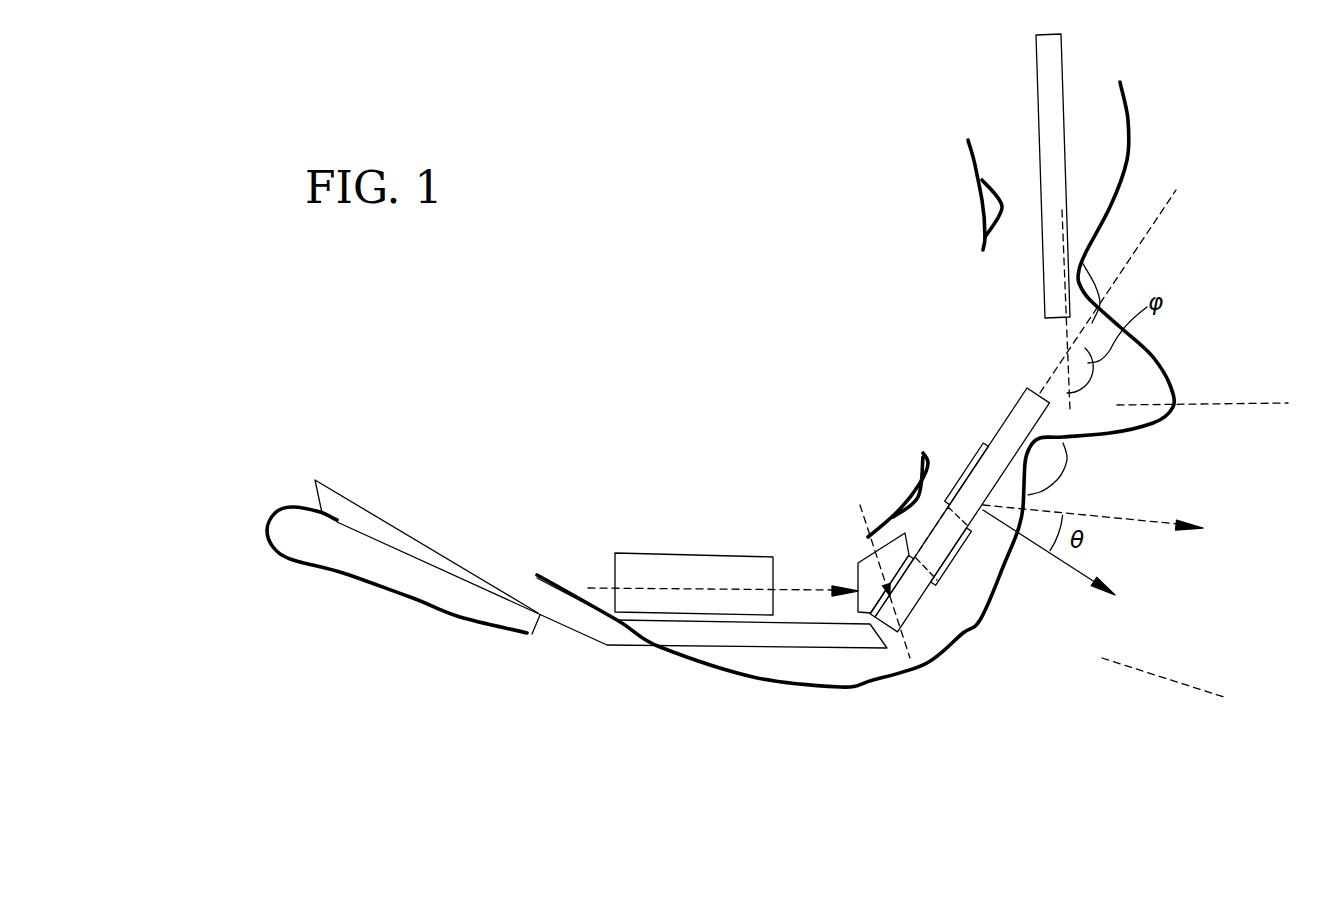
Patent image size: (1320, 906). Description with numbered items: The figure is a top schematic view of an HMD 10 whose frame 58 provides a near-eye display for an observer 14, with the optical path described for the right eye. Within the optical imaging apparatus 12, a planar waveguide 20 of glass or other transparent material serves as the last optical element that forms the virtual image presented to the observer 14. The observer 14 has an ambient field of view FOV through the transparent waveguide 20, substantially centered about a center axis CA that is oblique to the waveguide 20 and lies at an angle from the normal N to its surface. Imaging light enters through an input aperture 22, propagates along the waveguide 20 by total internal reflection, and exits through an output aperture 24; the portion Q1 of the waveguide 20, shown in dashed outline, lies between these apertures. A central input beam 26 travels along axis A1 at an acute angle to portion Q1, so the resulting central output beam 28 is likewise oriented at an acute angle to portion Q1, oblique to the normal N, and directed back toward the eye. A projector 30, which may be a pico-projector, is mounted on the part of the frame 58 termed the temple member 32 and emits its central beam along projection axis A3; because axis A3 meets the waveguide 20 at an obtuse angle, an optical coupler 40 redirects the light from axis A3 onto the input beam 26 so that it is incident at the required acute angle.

The HMD 10 is at (553, 743).
The optical imaging apparatus 12 is at (575, 421).
The observer 14 is at (1138, 113).
The planar waveguide 20 is at (1037, 125).
The input aperture 22 is at (890, 625).
The output aperture 24 is at (982, 452).
The input beam 26 is at (878, 614).
The output beam 28 is at (944, 476).
The projector 30 is at (650, 553).
The temple member 32 is at (630, 647).
The optical coupler 40 is at (855, 563).
The frame 58 is at (398, 528).
The axis of the input beam A1 is at (907, 643).
The projection axis A3 is at (748, 588).
The portion of waveguide Q1 is at (983, 603).
The normal N is at (1067, 565).
The center axis CA is at (1158, 523).
The field of view FOV is at (1144, 531).